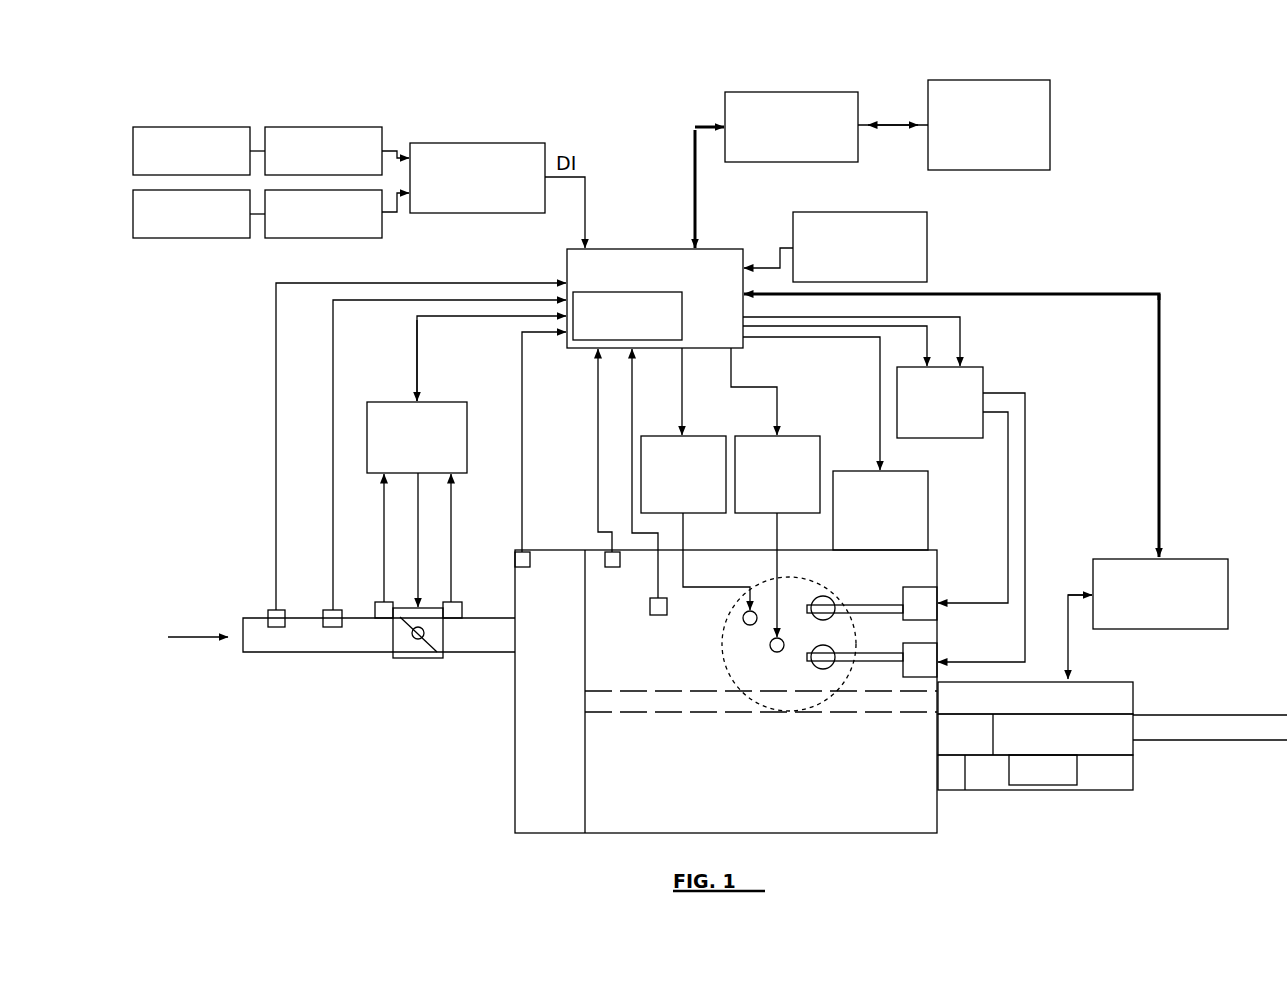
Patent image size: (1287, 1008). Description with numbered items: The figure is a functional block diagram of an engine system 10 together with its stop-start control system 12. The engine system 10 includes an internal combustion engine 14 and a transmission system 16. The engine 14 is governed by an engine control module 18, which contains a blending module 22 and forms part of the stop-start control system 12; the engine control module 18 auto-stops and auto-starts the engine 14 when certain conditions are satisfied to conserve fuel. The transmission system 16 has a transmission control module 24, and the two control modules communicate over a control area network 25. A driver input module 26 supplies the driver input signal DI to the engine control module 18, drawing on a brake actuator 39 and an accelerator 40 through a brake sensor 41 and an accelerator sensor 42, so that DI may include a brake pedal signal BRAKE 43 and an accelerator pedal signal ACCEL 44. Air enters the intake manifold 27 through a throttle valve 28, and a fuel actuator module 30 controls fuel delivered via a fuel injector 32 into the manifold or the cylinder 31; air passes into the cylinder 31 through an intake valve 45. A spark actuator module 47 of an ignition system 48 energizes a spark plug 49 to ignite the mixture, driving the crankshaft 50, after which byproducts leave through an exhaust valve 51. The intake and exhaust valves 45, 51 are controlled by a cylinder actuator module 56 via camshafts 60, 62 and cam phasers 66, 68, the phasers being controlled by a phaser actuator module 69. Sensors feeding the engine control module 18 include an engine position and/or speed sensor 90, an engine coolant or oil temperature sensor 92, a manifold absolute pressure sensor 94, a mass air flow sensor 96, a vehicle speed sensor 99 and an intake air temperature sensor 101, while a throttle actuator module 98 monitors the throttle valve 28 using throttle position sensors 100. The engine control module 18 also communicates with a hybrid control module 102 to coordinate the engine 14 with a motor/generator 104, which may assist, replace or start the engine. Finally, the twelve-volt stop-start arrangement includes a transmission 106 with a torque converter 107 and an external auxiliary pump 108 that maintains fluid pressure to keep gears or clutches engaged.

The engine system 10 is at (1183, 128).
The stop-start control system 12 is at (227, 98).
The internal combustion engine 14 is at (937, 555).
The transmission system 16 is at (1133, 683).
The engine control module 18 is at (655, 249).
The blending module 22 is at (682, 310).
The transmission control module 24 is at (1228, 590).
The control area network 25 is at (694, 150).
The driver input module 26 is at (465, 143).
The intake manifold 27 is at (515, 770).
The throttle valve 28 is at (420, 658).
The fuel actuator module 30 is at (665, 436).
The cylinder 31 is at (752, 700).
The fuel injector 32 is at (743, 618).
The brake actuator 39 is at (181, 127).
The accelerator 40 is at (187, 238).
The brake sensor 41 is at (312, 127).
The accelerator sensor 42 is at (320, 238).
The brake pedal signal BRAKE 43 is at (398, 148).
The accelerator pedal signal ACCEL 44 is at (397, 205).
The intake valve 45 is at (825, 590).
The spark actuator module 47 is at (800, 436).
The ignition system 48 is at (810, 378).
The spark plug 49 is at (770, 645).
The crankshaft 50 is at (650, 712).
The exhaust valve 51 is at (826, 672).
The cylinder actuator module 56 is at (928, 500).
The camshaft 60 is at (878, 605).
The camshaft 62 is at (880, 663).
The cam phaser 66 is at (920, 587).
The cam phaser 68 is at (925, 677).
The phaser actuator module 69 is at (983, 372).
The engine position and/or speed sensor 90 is at (660, 615).
The engine coolant or oil temperature sensor 92 is at (612, 567).
The manifold absolute pressure sensor 94 is at (515, 552).
The mass air flow sensor 96 is at (330, 627).
The throttle actuator module 98 is at (400, 402).
The vehicle speed sensor 99 is at (927, 255).
The throttle position sensor 100 is at (380, 618).
The intake air temperature sensor 101 is at (268, 615).
The hybrid control module 102 is at (793, 162).
The motor/generator 104 is at (1000, 170).
The transmission 106 is at (1120, 757).
The torque converter 107 is at (965, 790).
The auxiliary pump 108 is at (1045, 785).